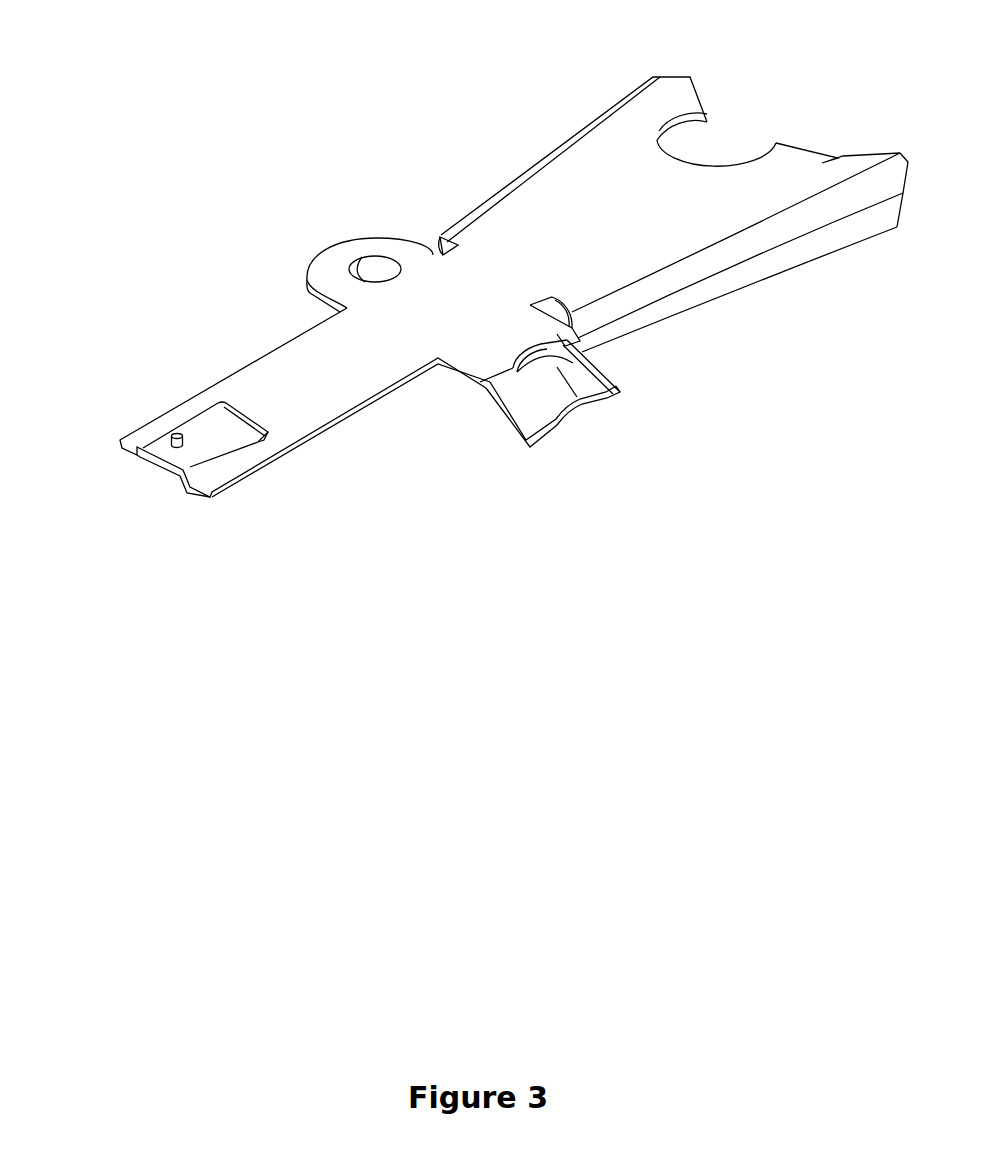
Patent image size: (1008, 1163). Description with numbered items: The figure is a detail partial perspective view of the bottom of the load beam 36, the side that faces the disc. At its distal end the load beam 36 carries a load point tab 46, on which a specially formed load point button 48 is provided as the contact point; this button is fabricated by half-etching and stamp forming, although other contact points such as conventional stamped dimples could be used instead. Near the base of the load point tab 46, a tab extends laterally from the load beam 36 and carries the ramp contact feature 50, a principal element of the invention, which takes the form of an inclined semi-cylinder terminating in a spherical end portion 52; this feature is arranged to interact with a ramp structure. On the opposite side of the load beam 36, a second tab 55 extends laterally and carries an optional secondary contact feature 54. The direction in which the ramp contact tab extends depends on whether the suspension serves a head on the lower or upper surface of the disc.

The load beam 36 is at (300, 90).
The load point tab 46 is at (307, 407).
The load point button 48 is at (178, 433).
The ramp contact feature 50 is at (553, 402).
The spherical end portion 52 is at (533, 347).
The secondary contact feature 54 is at (360, 257).
The second tab 55 is at (377, 238).